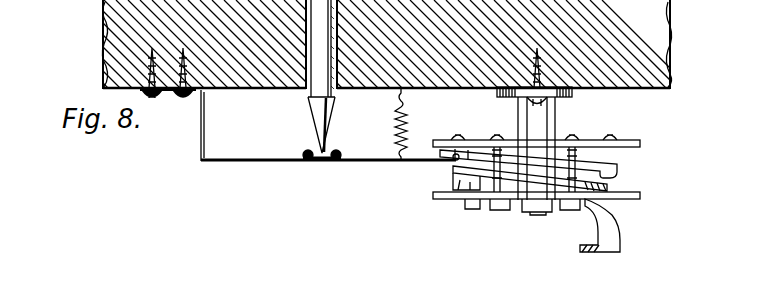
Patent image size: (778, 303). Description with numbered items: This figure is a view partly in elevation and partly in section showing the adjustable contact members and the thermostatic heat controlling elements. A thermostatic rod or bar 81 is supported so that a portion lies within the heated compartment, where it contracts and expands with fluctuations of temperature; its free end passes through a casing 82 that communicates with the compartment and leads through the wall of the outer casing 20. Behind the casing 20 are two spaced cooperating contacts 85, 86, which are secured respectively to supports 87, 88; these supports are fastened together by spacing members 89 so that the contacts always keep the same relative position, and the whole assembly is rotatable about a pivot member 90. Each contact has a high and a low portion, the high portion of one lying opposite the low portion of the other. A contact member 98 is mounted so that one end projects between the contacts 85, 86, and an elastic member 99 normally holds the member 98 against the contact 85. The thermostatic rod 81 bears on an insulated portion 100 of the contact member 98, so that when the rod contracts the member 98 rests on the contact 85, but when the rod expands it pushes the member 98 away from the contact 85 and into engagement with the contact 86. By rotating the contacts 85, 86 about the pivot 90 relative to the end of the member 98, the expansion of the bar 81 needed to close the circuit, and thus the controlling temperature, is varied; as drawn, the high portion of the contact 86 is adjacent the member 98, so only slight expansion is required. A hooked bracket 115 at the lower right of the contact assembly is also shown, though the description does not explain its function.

The outer casing 20 is at (660, 26).
The thermostatic rod or bar 81 is at (316, 102).
The casing 82 is at (305, 92).
The contact 85 is at (620, 174).
The contact 86 is at (442, 178).
The support 87 is at (640, 142).
The support 88 is at (452, 201).
The spacing members 89 is at (493, 192).
The pivot member 90 is at (515, 124).
The contact member 98 is at (270, 165).
The elastic member 99 is at (394, 125).
The insulated portion 100 is at (329, 164).
The hook bracket 115 is at (597, 247).